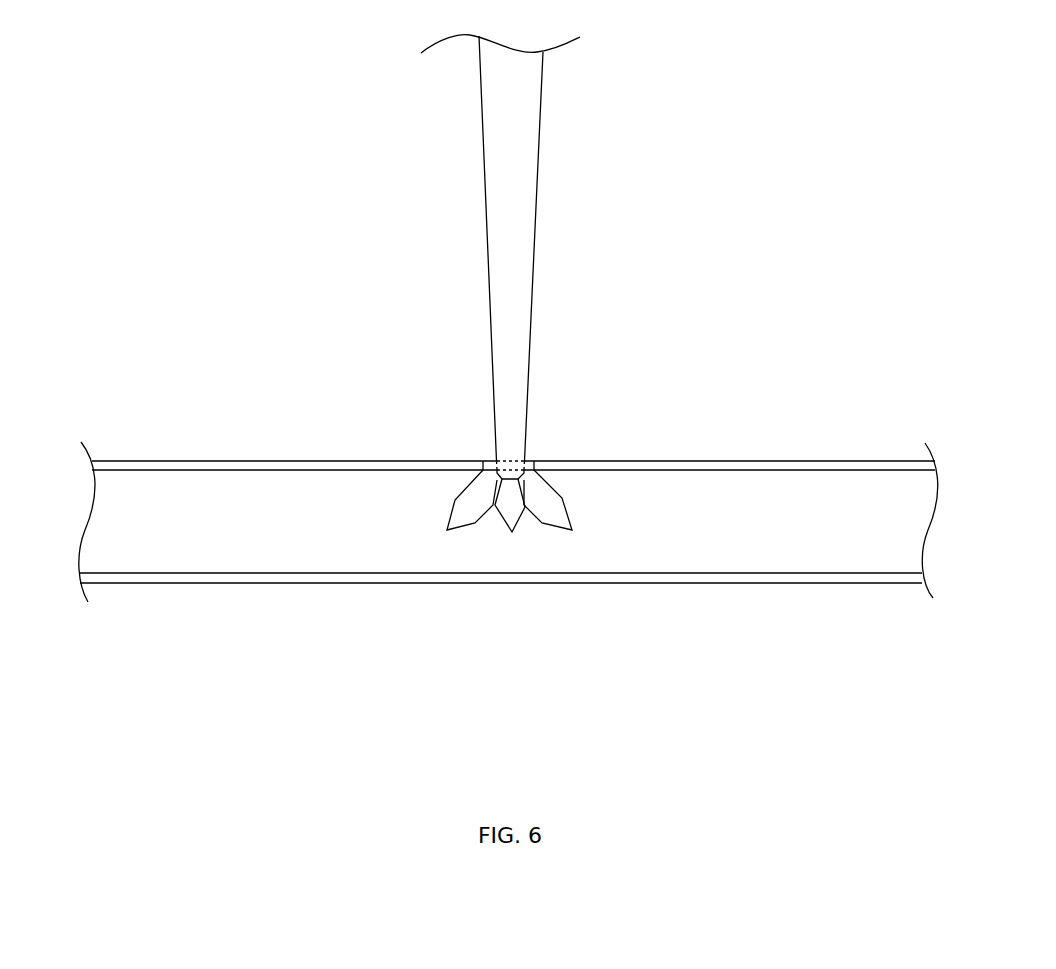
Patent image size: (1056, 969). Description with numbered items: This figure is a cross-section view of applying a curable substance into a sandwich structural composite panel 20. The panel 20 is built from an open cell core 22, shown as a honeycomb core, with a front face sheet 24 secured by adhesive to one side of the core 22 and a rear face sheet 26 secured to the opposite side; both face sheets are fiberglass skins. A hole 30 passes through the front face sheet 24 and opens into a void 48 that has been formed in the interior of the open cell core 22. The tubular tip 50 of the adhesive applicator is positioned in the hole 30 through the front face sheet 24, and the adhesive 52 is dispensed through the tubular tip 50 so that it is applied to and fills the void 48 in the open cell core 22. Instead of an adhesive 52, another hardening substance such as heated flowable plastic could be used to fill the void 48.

The sandwich structural composite panel 20 is at (847, 458).
The open cell core 22 is at (900, 533).
The front face sheet 24 is at (145, 460).
The rear face sheet 26 is at (138, 578).
The hole 30 is at (527, 455).
The void 48 is at (482, 497).
The tubular tip 50 is at (520, 195).
The adhesive 52 is at (512, 508).